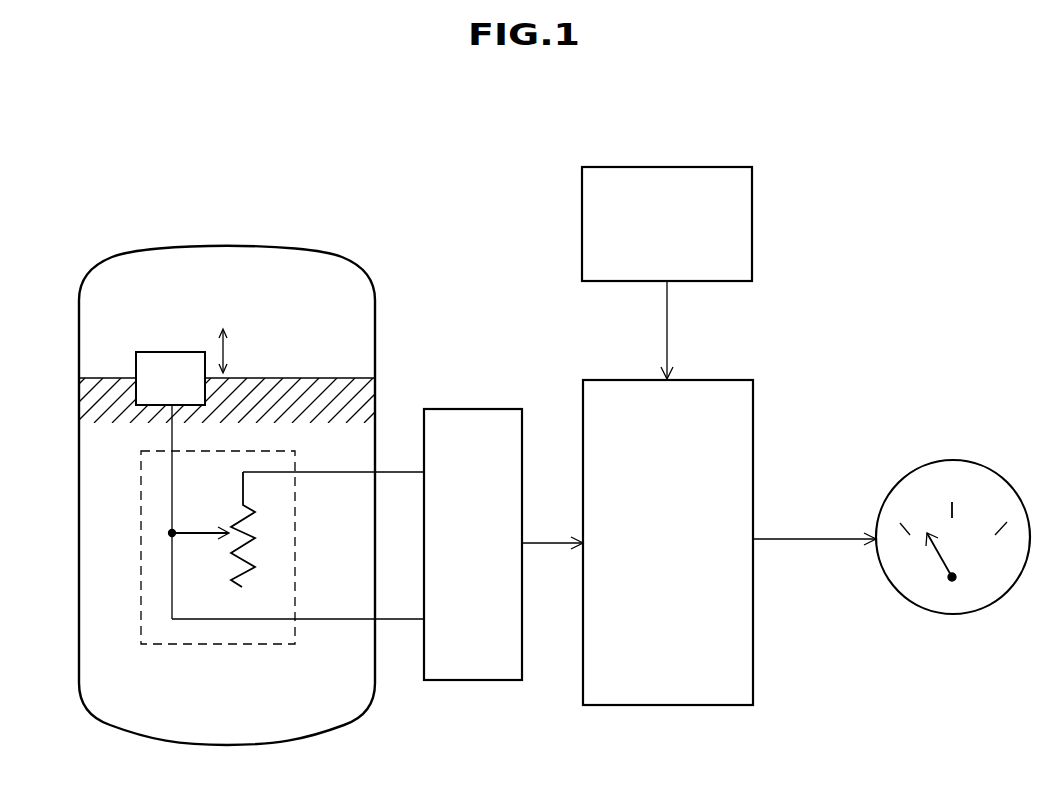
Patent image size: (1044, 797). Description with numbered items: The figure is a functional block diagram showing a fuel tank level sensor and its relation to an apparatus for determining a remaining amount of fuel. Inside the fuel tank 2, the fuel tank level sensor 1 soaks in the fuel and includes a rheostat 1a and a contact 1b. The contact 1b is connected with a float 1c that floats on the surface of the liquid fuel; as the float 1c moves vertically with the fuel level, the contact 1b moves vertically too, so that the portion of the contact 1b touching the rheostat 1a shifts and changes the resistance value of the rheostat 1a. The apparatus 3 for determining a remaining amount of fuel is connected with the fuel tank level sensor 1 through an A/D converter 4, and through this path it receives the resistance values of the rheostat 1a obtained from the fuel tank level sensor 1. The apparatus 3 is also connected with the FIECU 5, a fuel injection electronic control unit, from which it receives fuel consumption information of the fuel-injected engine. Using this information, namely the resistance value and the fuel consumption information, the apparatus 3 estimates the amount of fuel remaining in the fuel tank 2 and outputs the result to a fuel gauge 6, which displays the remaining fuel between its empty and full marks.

The fuel tank level sensor 1 is at (142, 603).
The rheostat 1a is at (248, 531).
The contact 1b is at (197, 531).
The float 1c is at (193, 351).
The fuel tank 2 is at (142, 256).
The apparatus for determining a remaining amount of fuel 3 is at (733, 705).
The A/D converter 4 is at (500, 680).
The FIECU 5 is at (720, 167).
The fuel gauge 6 is at (980, 462).